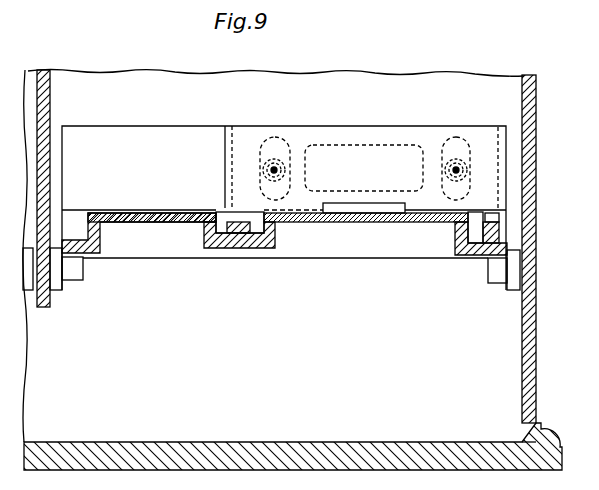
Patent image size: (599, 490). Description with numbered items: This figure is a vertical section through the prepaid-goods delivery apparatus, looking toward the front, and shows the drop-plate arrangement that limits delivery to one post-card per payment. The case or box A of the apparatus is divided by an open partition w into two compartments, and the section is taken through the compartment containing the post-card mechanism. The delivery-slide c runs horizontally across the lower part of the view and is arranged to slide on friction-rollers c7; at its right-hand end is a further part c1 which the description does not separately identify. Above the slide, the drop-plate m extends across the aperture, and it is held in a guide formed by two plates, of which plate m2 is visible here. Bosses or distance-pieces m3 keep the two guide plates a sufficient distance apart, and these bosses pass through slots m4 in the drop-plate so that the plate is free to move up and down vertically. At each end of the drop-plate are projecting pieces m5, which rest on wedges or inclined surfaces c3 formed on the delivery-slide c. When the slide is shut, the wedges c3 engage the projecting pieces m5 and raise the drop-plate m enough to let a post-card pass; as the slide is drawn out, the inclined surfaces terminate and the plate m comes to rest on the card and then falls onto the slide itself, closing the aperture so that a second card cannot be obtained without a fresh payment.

The open partition w is at (44, 308).
The case or box A is at (293, 272).
The delivery-slide c is at (394, 223).
The plate block c1 is at (495, 284).
The wedges or inclined surfaces c3 is at (468, 240).
The friction-rollers c7 is at (81, 281).
The drop-plate m is at (358, 223).
The guide plate m2 is at (247, 131).
The bosses or distance-pieces m3 is at (262, 165).
The slots m4 is at (447, 143).
The projecting pieces m5 is at (544, 213).